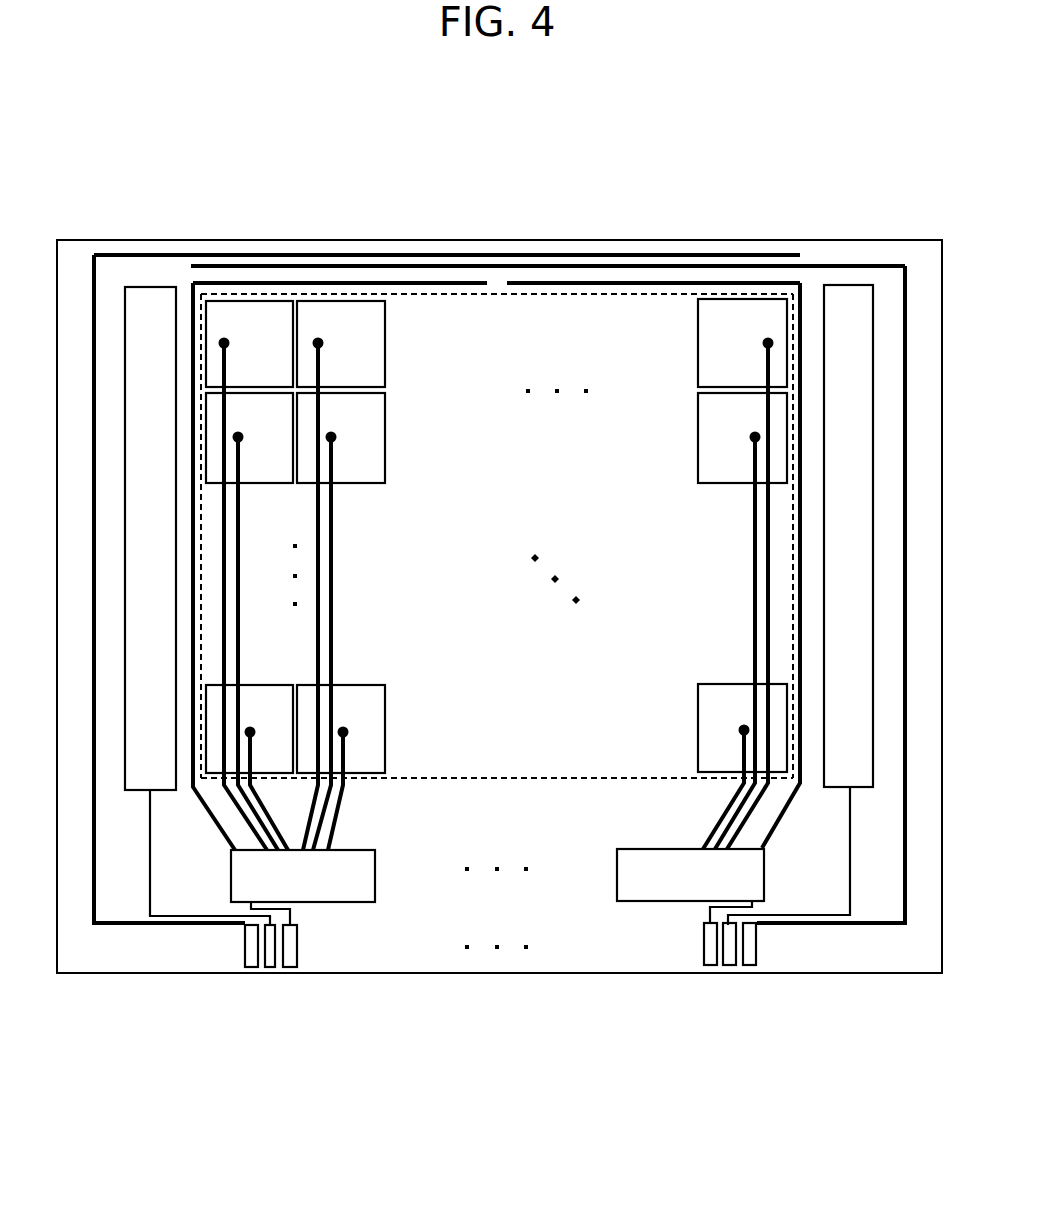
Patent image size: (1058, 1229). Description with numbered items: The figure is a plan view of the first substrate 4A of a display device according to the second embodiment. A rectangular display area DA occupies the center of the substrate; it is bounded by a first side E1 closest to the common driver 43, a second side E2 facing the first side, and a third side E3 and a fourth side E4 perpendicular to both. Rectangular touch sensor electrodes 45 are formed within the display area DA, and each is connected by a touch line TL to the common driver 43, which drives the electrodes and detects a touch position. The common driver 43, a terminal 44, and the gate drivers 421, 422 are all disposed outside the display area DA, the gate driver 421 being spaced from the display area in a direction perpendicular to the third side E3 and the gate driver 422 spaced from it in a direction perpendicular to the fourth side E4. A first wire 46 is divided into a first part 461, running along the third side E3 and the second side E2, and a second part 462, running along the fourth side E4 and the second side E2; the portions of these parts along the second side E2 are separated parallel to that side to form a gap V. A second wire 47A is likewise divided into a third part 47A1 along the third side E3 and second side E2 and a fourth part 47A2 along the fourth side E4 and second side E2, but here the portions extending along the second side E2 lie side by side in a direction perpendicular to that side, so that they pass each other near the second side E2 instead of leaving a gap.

The first substrate 4A is at (893, 973).
The gate driver 421 is at (150, 287).
The gate driver 422 is at (845, 285).
The common driver 43 is at (345, 902).
The terminal 44 is at (290, 968).
The touch sensor electrode 45 is at (390, 320).
The first wire 46 is at (496, 490).
The first part 461 is at (437, 281).
The second part 462 is at (600, 281).
The gap V is at (497, 283).
The second wire 47A is at (499, 506).
The third part 47A1 is at (684, 253).
The fourth part 47A2 is at (683, 147).
The touch line TL is at (235, 370).
The display area DA is at (500, 615).
The first side E1 is at (612, 778).
The second side E2 is at (615, 250).
The third side E3 is at (200, 660).
The fourth side E4 is at (795, 660).